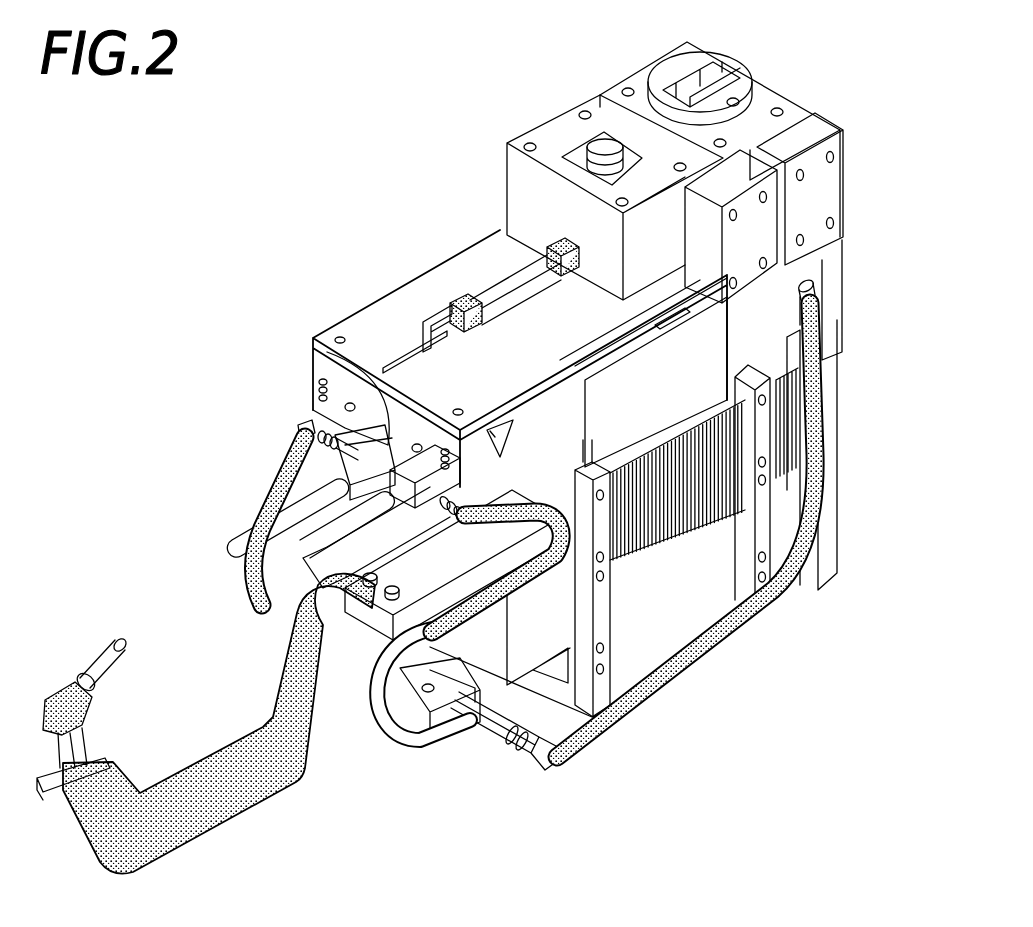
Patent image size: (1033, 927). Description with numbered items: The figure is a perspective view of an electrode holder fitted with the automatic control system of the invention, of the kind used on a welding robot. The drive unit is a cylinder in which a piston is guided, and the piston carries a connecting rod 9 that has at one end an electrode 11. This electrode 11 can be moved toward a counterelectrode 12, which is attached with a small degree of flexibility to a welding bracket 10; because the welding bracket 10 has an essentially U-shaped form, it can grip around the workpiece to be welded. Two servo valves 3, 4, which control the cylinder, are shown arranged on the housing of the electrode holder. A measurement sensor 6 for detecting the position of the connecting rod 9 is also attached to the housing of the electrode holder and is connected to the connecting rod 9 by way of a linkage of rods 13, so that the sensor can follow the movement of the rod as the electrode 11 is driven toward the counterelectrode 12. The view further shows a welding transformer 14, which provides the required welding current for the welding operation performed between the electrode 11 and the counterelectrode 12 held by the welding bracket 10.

The servo valve 3 is at (750, 233).
The servo valve 4 is at (820, 193).
The measurement sensor 6 is at (500, 277).
The connecting rod 9 is at (385, 447).
The welding bracket 10 is at (250, 787).
The electrode 11 is at (218, 540).
The counterelectrode 12 is at (127, 637).
The linkage of rods 13 is at (433, 320).
The welding transformer 14 is at (687, 533).